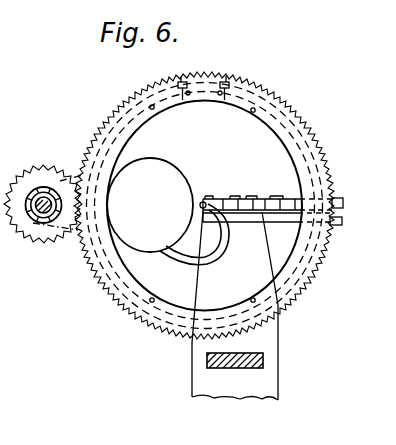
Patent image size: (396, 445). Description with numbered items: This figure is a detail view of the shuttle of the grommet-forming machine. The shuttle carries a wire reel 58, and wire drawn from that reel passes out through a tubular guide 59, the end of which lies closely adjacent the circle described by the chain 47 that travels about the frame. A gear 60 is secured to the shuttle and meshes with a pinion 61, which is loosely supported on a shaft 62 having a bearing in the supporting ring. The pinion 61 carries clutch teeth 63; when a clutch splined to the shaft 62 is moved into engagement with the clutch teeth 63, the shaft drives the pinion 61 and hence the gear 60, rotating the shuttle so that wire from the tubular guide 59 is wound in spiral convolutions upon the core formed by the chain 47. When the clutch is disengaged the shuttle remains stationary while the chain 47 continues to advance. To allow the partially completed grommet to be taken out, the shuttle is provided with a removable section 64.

The chain 47 is at (278, 196).
The wire reel 58 is at (172, 173).
The tubular guide 59 is at (161, 262).
The gear 60 is at (101, 282).
The pinion 61 is at (40, 238).
The shaft 62 is at (44, 194).
The clutch teeth 63 is at (50, 192).
The removable section 64 is at (206, 83).